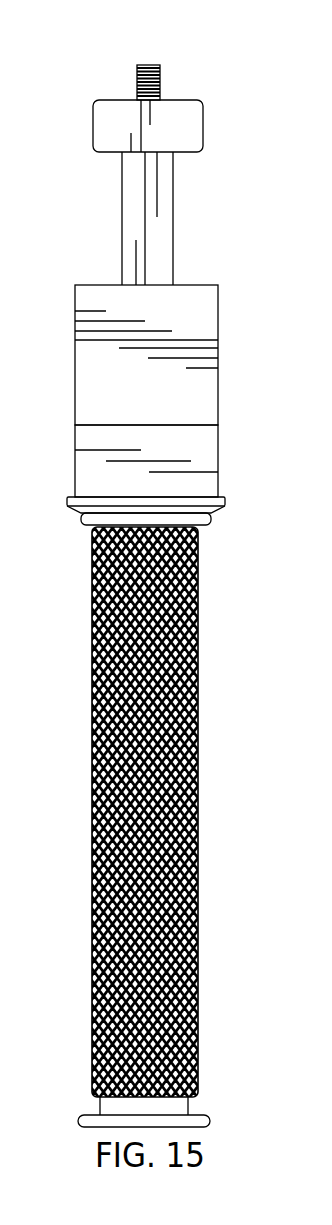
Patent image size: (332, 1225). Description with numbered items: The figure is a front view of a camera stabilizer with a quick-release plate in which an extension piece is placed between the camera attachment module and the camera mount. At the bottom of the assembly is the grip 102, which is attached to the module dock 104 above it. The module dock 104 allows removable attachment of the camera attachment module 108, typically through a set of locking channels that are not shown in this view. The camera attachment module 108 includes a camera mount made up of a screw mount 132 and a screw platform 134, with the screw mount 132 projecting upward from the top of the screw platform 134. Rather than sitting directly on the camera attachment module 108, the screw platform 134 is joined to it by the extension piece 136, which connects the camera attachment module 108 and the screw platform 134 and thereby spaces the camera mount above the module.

The grip 102 is at (92, 787).
The module dock 104 is at (218, 452).
The camera attachment module 108 is at (218, 387).
The screw mount 132 is at (147, 63).
The screw platform 134 is at (203, 123).
The extension piece 136 is at (173, 210).